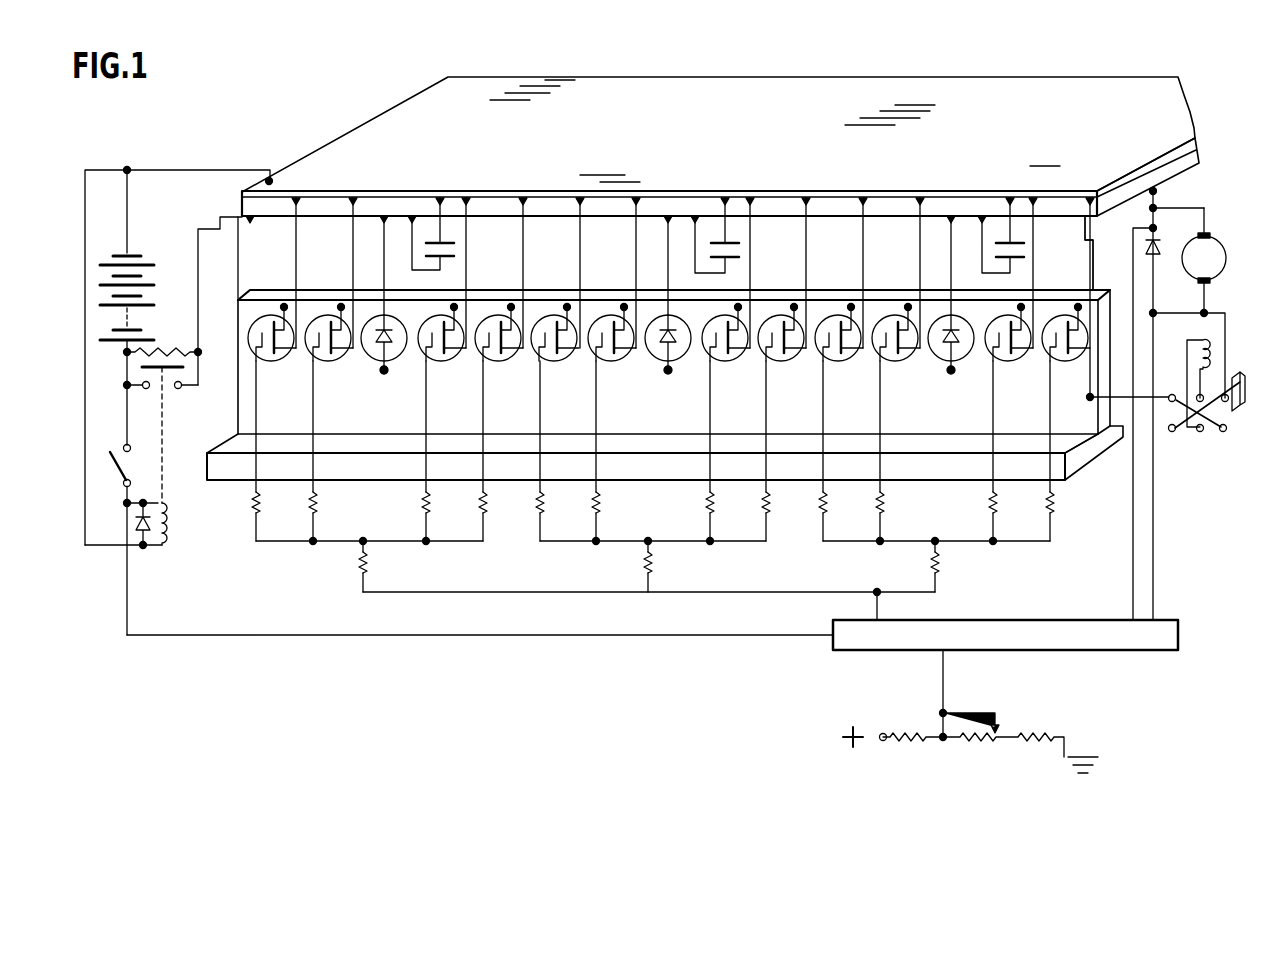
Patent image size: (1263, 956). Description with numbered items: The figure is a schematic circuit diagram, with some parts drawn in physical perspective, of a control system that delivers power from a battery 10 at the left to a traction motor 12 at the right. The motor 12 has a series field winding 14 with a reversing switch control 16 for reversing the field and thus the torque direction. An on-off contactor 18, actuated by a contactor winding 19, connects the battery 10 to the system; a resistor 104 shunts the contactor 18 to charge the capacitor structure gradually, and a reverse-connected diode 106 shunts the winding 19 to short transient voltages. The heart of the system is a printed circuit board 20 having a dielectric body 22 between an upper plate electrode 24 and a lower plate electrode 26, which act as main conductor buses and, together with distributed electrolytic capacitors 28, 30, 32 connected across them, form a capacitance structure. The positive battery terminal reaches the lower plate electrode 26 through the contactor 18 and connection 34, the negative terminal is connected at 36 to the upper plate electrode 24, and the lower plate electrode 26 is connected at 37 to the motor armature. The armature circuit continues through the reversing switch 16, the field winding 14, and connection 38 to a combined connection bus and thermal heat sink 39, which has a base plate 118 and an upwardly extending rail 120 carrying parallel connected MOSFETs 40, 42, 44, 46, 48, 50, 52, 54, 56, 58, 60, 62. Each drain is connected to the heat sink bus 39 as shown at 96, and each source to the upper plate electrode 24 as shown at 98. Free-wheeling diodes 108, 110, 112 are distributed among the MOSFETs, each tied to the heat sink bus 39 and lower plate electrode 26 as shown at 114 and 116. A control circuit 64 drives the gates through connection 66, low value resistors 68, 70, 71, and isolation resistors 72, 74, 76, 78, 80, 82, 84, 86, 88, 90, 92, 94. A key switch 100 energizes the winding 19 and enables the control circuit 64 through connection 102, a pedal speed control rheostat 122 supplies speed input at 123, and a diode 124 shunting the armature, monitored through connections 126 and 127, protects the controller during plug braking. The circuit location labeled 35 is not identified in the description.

The battery 10 is at (116, 258).
The traction motor 12 is at (1226, 258).
The series field winding 14 is at (1202, 342).
The reversing switch control 16 is at (1246, 380).
The on-off contactor 18 is at (174, 372).
The contactor winding 19 is at (164, 503).
The printed circuit board 20 is at (703, 293).
The dielectric body 22 is at (272, 215).
The upper plate electrode 24 is at (421, 103).
The lower plate electrode 26 is at (336, 216).
The electrolytic capacitor 28 is at (458, 250).
The electrolytic capacitor 30 is at (742, 250).
The electrolytic capacitor 32 is at (1027, 250).
The connection 34 is at (224, 228).
The conductor 35 is at (1190, 314).
The connection 36 is at (208, 170).
The connection 37 is at (1160, 206).
The connection 38 is at (1162, 394).
The combined connection bus and thermal heat sink 39 is at (1095, 452).
The MOSFET 40 is at (280, 362).
The MOSFET 42 is at (338, 362).
The MOSFET 44 is at (450, 362).
The MOSFET 46 is at (506, 362).
The MOSFET 48 is at (562, 362).
The MOSFET 50 is at (618, 362).
The MOSFET 52 is at (732, 362).
The MOSFET 54 is at (789, 362).
The MOSFET 56 is at (846, 362).
The MOSFET 58 is at (902, 362).
The MOSFET 60 is at (1020, 362).
The MOSFET 62 is at (1078, 362).
The control circuit 64 is at (900, 652).
The connection 66 is at (766, 590).
The resistor 68 is at (370, 558).
The resistor 70 is at (642, 560).
The resistor 71 is at (942, 558).
The isolation resistor 72 is at (266, 506).
The isolation resistor 74 is at (320, 506).
The isolation resistor 76 is at (432, 506).
The isolation resistor 78 is at (494, 522).
The isolation resistor 80 is at (554, 508).
The isolation resistor 82 is at (602, 506).
The isolation resistor 84 is at (716, 506).
The isolation resistor 86 is at (776, 520).
The isolation resistor 88 is at (838, 508).
The isolation resistor 90 is at (894, 508).
The isolation resistor 92 is at (986, 520).
The isolation resistor 94 is at (1042, 520).
The drain connection 96 is at (284, 300).
The source connection 98 is at (532, 262).
The key switch 100 is at (110, 460).
The connection 102 is at (228, 628).
The resistor 104 is at (182, 350).
The reverse-connected diode 106 is at (160, 534).
The free-wheeling diode 108 is at (396, 368).
The free-wheeling diode 110 is at (676, 368).
The free-wheeling diode 112 is at (958, 368).
The diode connection 114 is at (388, 370).
The diode connection 116 is at (390, 230).
The base plate 118 is at (1075, 480).
The upwardly extending rail 120 is at (1096, 290).
The pedal speed control rheostat 122 is at (1004, 728).
The connection 123 is at (946, 688).
The diode 124 is at (1158, 248).
The connection 126 is at (1120, 556).
The connection 127 is at (1156, 556).